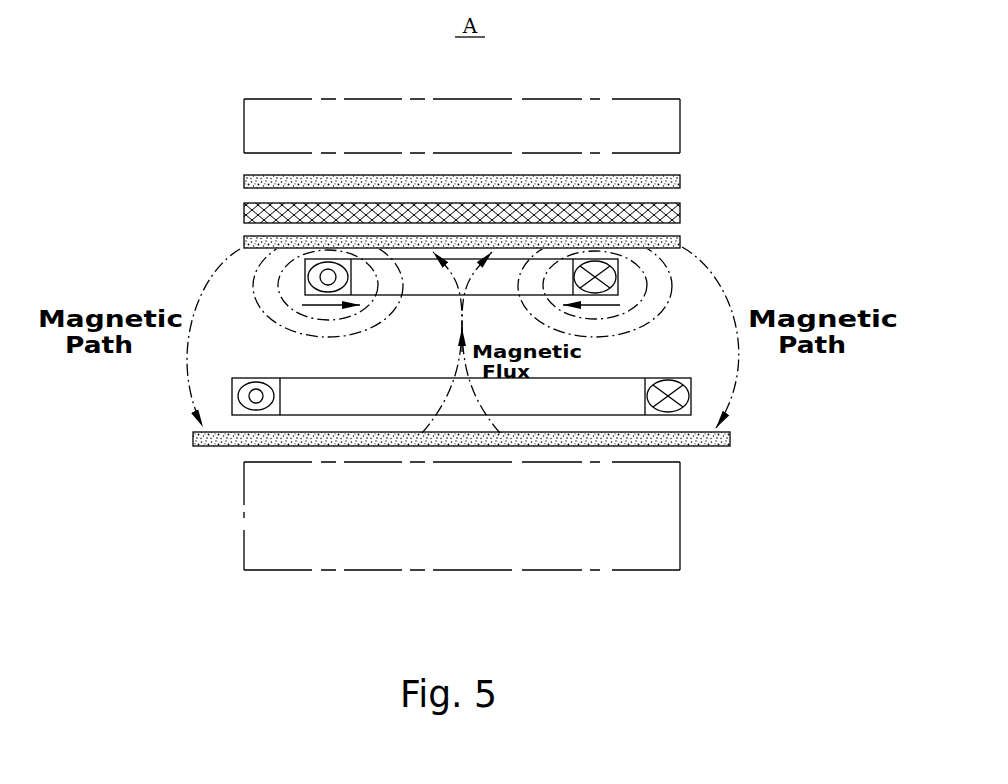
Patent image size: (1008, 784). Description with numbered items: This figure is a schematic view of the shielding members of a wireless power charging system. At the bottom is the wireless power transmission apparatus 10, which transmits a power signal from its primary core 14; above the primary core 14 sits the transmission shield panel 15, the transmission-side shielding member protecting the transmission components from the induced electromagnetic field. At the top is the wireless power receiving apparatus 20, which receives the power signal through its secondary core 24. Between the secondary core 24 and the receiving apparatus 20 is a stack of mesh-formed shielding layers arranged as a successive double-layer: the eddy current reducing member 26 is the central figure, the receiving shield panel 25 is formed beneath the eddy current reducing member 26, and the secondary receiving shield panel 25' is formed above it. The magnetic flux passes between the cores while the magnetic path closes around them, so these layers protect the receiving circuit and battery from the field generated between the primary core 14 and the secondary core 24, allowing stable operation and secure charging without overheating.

The wireless power transmission apparatus 10 is at (200, 565).
The primary core 14 is at (687, 388).
The transmission shield panel 15 is at (730, 440).
The wireless power receiving apparatus 20 is at (742, 103).
The secondary core 24 is at (610, 281).
The receiving shield panel 25 is at (400, 245).
The secondary receiving shield panel 25' is at (528, 180).
The eddy current reducing member 26 is at (244, 213).